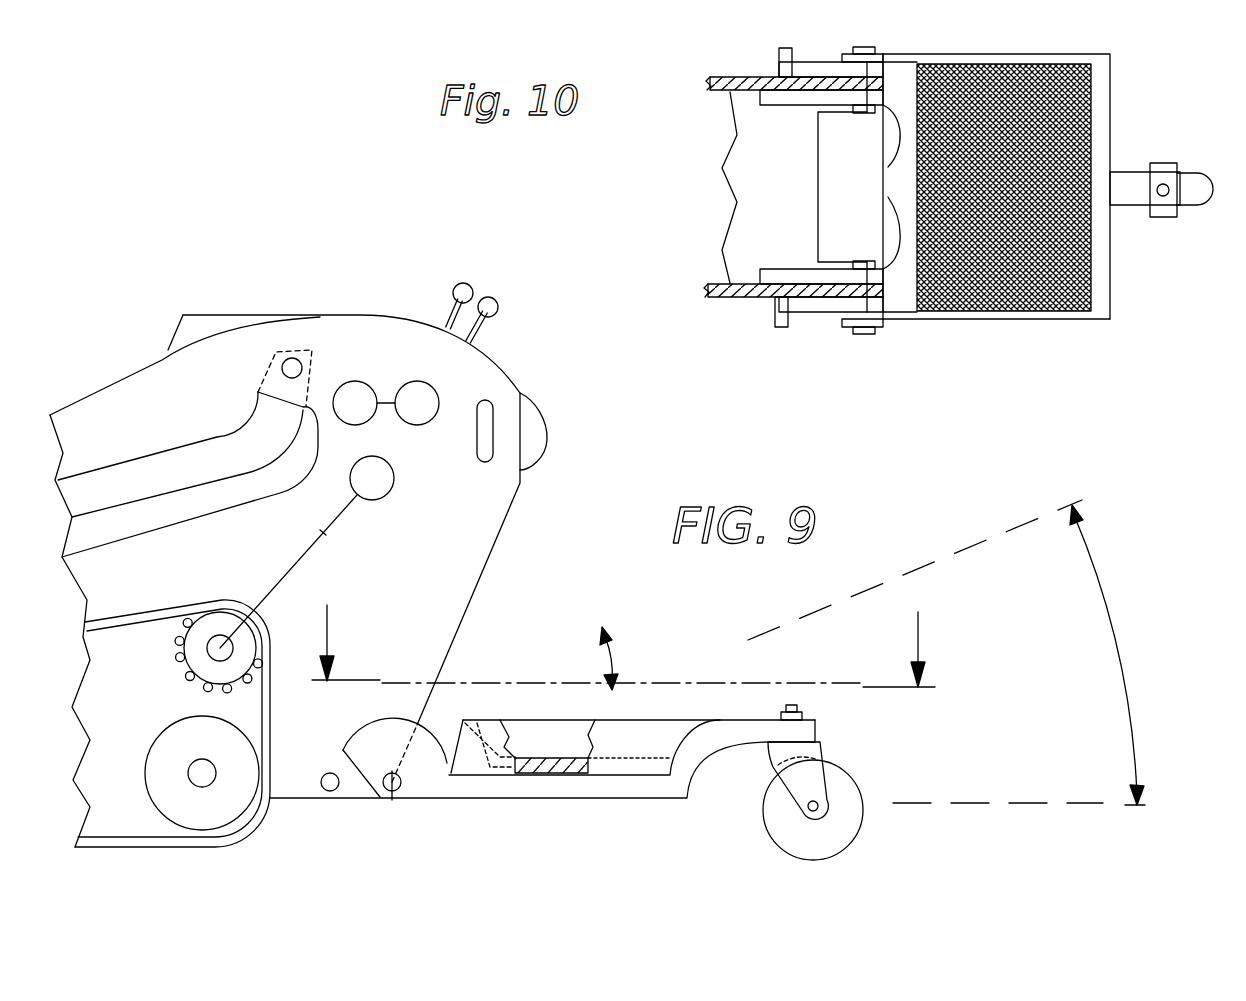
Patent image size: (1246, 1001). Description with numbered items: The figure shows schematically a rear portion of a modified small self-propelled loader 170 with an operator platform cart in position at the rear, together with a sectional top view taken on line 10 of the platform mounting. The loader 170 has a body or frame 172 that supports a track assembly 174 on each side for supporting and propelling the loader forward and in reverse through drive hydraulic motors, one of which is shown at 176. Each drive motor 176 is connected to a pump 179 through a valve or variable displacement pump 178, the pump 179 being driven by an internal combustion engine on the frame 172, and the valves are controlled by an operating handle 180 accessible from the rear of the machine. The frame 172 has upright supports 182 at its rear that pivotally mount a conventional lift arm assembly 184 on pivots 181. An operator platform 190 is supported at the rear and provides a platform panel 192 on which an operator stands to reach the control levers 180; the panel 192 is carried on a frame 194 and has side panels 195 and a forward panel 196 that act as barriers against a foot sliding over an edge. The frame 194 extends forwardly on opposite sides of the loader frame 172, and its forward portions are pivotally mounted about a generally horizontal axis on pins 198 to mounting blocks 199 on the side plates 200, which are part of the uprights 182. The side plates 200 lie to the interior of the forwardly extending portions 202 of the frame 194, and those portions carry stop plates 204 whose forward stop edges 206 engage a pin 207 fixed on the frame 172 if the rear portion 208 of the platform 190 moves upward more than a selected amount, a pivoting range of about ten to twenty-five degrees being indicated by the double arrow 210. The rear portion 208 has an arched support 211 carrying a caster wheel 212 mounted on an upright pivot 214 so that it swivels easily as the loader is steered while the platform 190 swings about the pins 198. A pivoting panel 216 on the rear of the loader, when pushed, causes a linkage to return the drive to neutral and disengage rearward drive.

In FIG. 9, the section line indicator 10 is at (641, 640).
In FIG. 9, the loader 170 is at (514, 368).
In FIG. 10, the body or frame 172 is at (760, 167).
In FIG. 9, the track assembly 174 is at (160, 606).
In FIG. 9, the drive hydraulic motor 176 is at (368, 499).
In FIG. 9, the valve or variable displacement pump 178 is at (429, 421).
In FIG. 9, the pump 179 is at (353, 381).
In FIG. 9, the operating handle 180 is at (487, 296).
In FIG. 9, the pivot 181 is at (293, 357).
In FIG. 9, the upright support 182 is at (560, 468).
In FIG. 9, the lift arm assembly 184 is at (197, 470).
In FIG. 9, the operator platform 190 is at (595, 644).
In FIG. 10, the operator platform 190 is at (1122, 246).
In FIG. 9, the platform panel 192 is at (548, 757).
In FIG. 10, the platform panel 192 is at (1040, 235).
In FIG. 9, the frame 194 is at (567, 790).
In FIG. 9, the side wall or panel 195 is at (647, 742).
In FIG. 10, the side wall or panel 195 is at (1010, 320).
In FIG. 9, the forward wall or panel 196 is at (460, 719).
In FIG. 9, the pin 198 is at (395, 800).
In FIG. 10, the pin 198 is at (860, 260).
In FIG. 10, the mounting block 199 is at (892, 187).
In FIG. 10, the side plate 200 is at (760, 92).
In FIG. 10, the forwardly extending portion 202 is at (870, 47).
In FIG. 9, the stop plate 204 is at (617, 665).
In FIG. 10, the stop plate 204 is at (810, 62).
In FIG. 9, the forward stop edge 206 is at (338, 762).
In FIG. 9, the pin 207 is at (330, 792).
In FIG. 10, the rear portion 208 is at (1128, 183).
In FIG. 9, the double arrow 210 is at (1097, 568).
In FIG. 9, the arched support 211 is at (722, 733).
In FIG. 9, the caster wheel 212 is at (767, 801).
In FIG. 10, the caster wheel 212 is at (1197, 196).
In FIG. 9, the upright pivot 214 is at (795, 704).
In FIG. 9, the pivoting panel 216 is at (642, 423).